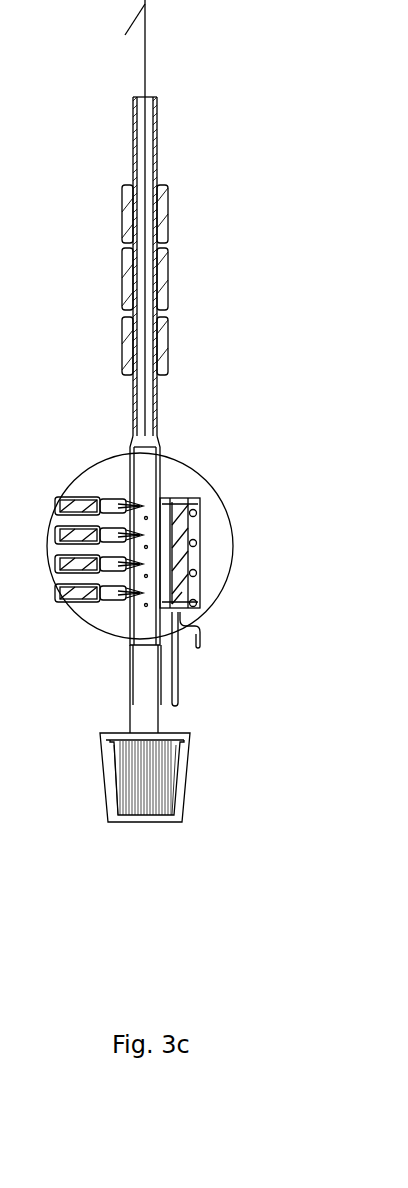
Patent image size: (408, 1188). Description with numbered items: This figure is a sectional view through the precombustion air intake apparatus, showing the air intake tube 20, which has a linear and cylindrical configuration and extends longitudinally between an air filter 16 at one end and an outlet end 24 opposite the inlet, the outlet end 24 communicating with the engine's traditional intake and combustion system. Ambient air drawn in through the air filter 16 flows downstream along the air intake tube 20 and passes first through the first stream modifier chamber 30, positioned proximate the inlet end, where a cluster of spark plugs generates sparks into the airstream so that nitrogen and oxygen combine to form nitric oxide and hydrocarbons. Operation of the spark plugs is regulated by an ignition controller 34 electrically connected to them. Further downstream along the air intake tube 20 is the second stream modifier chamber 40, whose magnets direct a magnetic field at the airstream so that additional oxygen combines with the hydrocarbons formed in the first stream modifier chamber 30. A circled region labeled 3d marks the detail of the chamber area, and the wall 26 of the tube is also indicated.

The air filter 16 is at (105, 790).
The air intake tube 20 is at (184, 401).
The outlet end 24 is at (156, 97).
The tube 26 is at (147, 163).
The first stream modifier chamber 30 is at (101, 472).
The ignition controller 34 is at (185, 563).
The second stream modifier chamber 40 is at (186, 272).
The detail view circle 3d is at (177, 522).